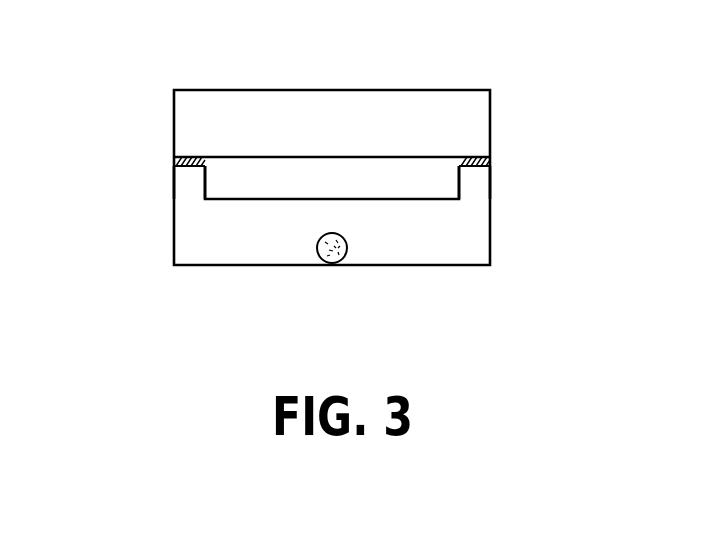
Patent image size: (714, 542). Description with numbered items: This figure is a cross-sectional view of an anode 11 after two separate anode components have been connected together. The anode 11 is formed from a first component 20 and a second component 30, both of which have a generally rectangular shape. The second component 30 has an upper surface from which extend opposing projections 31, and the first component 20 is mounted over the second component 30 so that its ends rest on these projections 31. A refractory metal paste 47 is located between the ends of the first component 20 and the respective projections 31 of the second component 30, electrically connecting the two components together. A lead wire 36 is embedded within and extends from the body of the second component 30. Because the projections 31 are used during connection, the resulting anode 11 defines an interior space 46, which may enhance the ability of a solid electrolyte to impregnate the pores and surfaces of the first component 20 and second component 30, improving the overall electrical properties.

The anode 11 is at (108, 110).
The first component 20 is at (480, 117).
The second component 30 is at (468, 248).
The projections 31 is at (187, 185).
The lead wire 36 is at (317, 250).
The interior space 46 is at (241, 170).
The refractory metal paste 47 is at (192, 157).